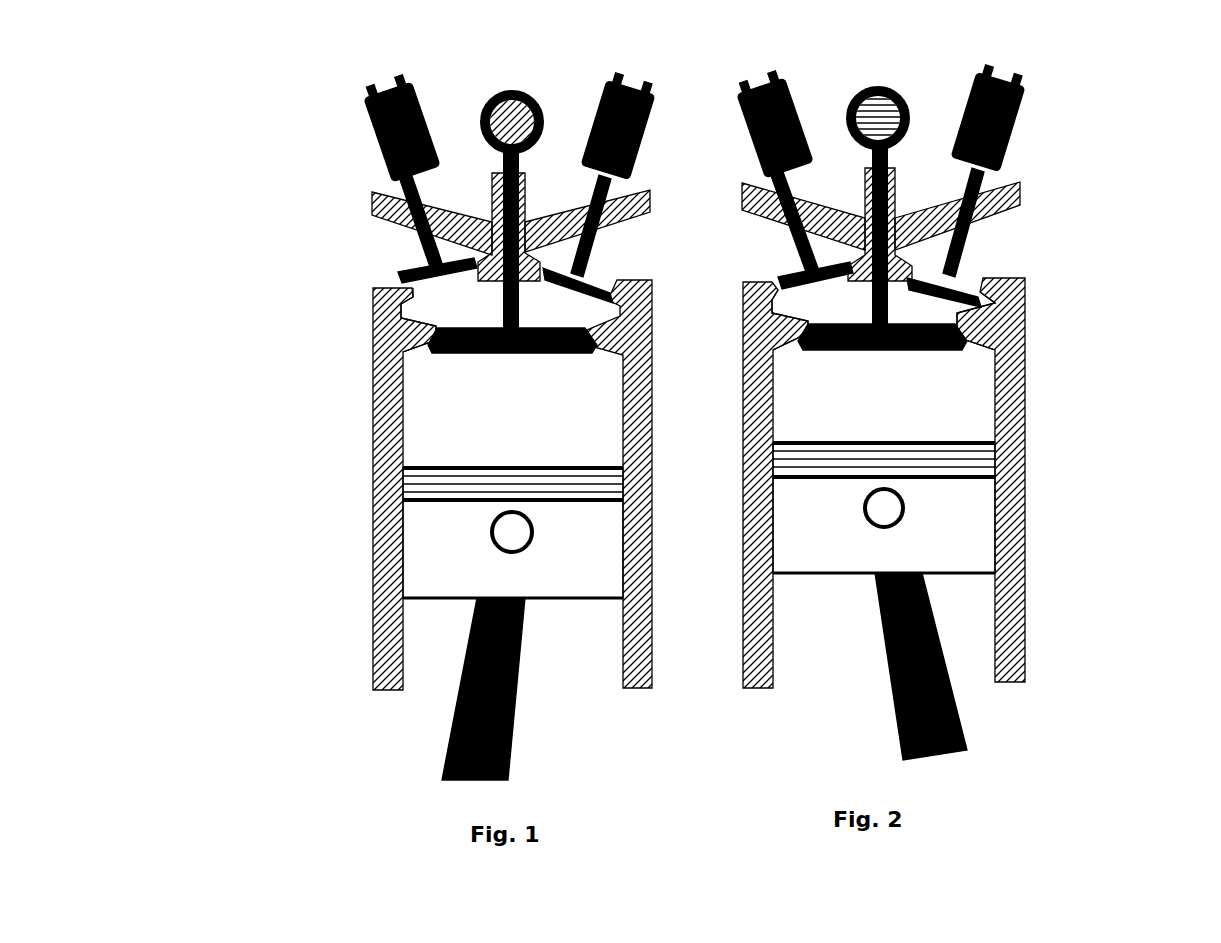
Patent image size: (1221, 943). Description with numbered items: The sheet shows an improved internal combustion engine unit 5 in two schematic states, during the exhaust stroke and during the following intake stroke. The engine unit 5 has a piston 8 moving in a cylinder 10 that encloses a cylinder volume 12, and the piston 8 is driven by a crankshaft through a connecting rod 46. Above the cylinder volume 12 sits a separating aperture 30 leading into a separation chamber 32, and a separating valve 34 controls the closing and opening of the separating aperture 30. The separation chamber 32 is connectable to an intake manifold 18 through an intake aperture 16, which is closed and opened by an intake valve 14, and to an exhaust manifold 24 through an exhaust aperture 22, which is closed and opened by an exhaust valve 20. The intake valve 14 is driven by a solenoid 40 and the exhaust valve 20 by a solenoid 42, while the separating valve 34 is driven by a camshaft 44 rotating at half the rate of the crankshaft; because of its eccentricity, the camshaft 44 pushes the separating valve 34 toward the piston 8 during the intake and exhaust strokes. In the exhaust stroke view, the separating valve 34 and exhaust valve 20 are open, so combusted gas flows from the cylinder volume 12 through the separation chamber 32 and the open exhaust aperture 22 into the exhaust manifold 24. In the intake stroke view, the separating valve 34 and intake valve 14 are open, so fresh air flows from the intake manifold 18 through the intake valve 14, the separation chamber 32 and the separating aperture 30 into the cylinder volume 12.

In FIG. 1, the engine unit 5 is at (285, 627).
In FIG. 2, the engine unit 5 is at (1070, 338).
In FIG. 1, the piston 8 is at (450, 538).
In FIG. 2, the piston 8 is at (977, 523).
In FIG. 1, the cylinder 10 is at (395, 570).
In FIG. 2, the cylinder 10 is at (1025, 545).
In FIG. 1, the cylinder volume 12 is at (423, 445).
In FIG. 2, the cylinder volume 12 is at (968, 417).
In FIG. 1, the intake valve 14 is at (597, 282).
In FIG. 2, the intake valve 14 is at (967, 290).
In FIG. 2, the intake aperture 16 is at (988, 293).
In FIG. 2, the intake manifold 18 is at (1022, 190).
In FIG. 1, the exhaust valve 20 is at (415, 273).
In FIG. 2, the exhaust valve 20 is at (800, 278).
In FIG. 1, the exhaust aperture 22 is at (405, 300).
In FIG. 2, the exhaust aperture 22 is at (825, 288).
In FIG. 1, the exhaust manifold 24 is at (372, 205).
In FIG. 1, the separating aperture 30 is at (433, 332).
In FIG. 2, the separating aperture 30 is at (963, 325).
In FIG. 1, the separation chamber 32 is at (448, 315).
In FIG. 2, the separation chamber 32 is at (823, 307).
In FIG. 1, the separating valve 34 is at (442, 355).
In FIG. 2, the separating valve 34 is at (940, 347).
In FIG. 1, the solenoid 40 is at (642, 113).
In FIG. 2, the solenoid 40 is at (1017, 113).
In FIG. 1, the solenoid 42 is at (382, 147).
In FIG. 2, the solenoid 42 is at (787, 95).
In FIG. 1, the camshaft 44 is at (520, 98).
In FIG. 2, the camshaft 44 is at (893, 92).
In FIG. 1, the connecting rod 46 is at (452, 728).
In FIG. 2, the connecting rod 46 is at (897, 695).